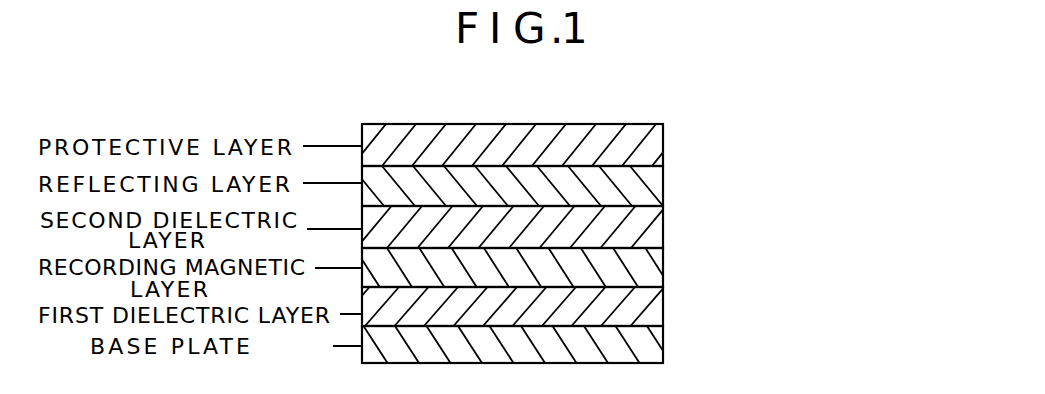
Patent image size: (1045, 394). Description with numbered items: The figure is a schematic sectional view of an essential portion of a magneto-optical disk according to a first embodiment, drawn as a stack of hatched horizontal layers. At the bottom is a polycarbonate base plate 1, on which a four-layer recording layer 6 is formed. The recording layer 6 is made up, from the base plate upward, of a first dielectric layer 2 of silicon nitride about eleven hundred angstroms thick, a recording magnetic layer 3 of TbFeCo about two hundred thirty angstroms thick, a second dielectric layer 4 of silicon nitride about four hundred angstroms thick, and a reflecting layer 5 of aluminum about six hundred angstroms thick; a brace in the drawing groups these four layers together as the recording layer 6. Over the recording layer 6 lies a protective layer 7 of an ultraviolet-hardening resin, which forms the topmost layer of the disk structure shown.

The base plate 1 is at (658, 337).
The first dielectric layer 2 is at (534, 306).
The recording magnetic layer 3 is at (657, 262).
The second dielectric layer 4 is at (656, 229).
The reflecting layer 5 is at (656, 187).
The recording layer 6 is at (550, 244).
The protective layer 7 is at (655, 139).